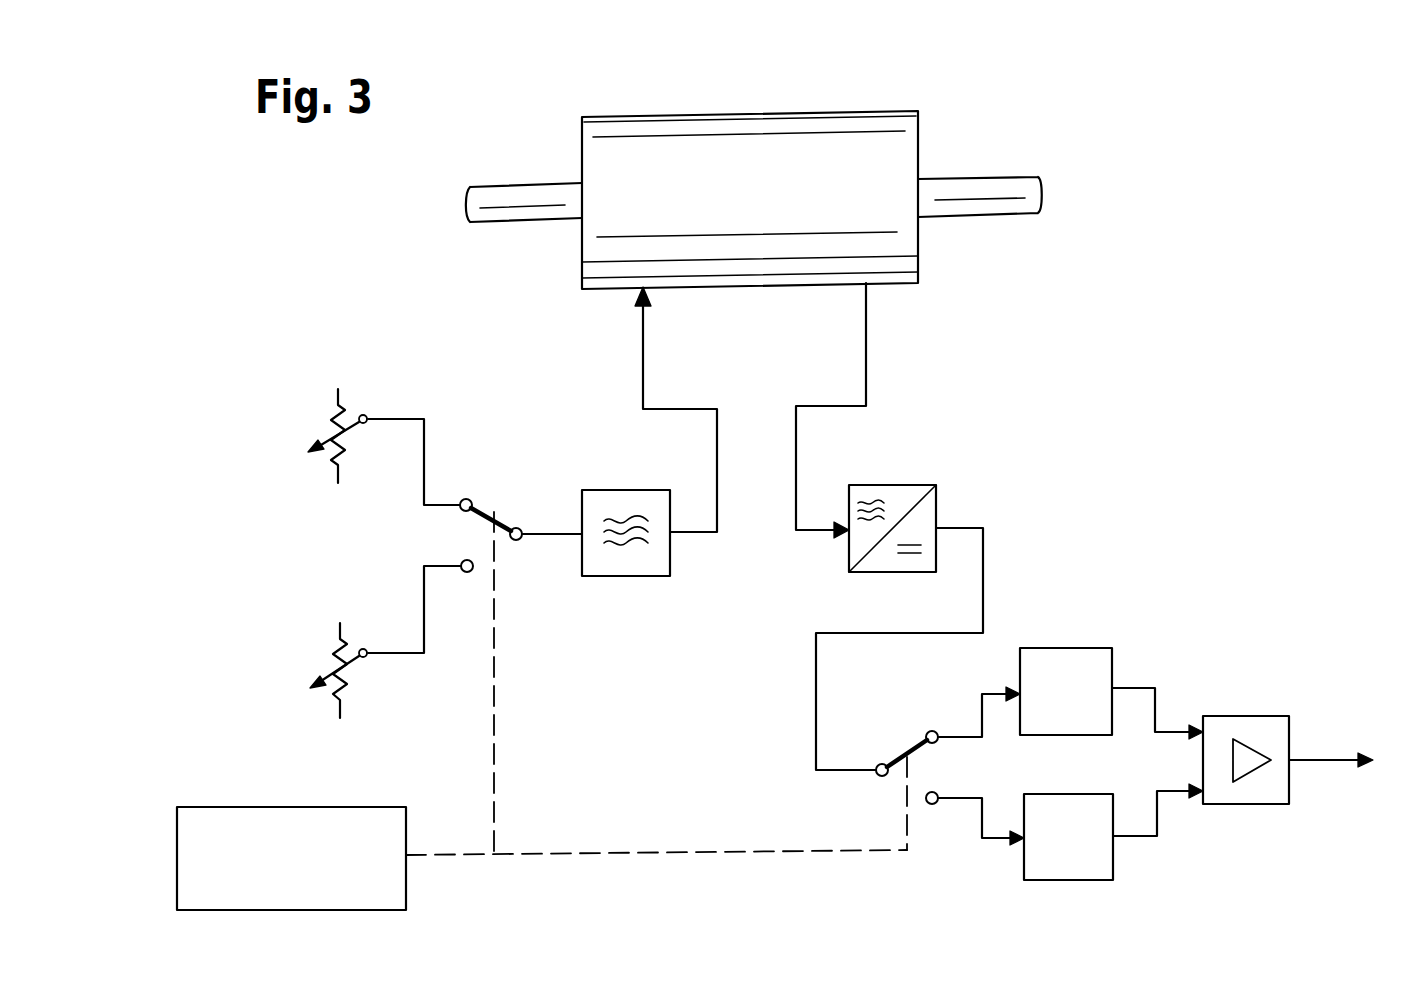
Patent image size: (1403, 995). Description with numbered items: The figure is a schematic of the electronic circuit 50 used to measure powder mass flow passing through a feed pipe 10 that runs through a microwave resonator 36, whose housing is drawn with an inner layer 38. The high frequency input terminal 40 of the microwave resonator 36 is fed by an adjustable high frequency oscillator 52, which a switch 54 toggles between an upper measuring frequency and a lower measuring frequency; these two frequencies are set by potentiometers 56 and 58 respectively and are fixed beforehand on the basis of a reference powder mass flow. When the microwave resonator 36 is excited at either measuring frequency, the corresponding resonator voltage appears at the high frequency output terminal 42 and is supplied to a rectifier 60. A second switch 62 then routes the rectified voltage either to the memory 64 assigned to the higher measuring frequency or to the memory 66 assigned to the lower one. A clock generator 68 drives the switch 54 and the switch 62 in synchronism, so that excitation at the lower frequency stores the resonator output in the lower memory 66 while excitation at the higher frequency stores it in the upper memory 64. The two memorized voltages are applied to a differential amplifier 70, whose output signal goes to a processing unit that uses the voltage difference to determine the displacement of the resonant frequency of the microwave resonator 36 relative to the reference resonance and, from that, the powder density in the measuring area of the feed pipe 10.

The feed pipe 10 is at (500, 190).
The microwave resonator 36 is at (636, 104).
The electrode layer 38 is at (820, 127).
The high frequency input terminal 40 is at (643, 347).
The high frequency output terminal 42 is at (866, 357).
The electronic circuit 50 is at (1208, 299).
The adjustable high frequency oscillator 52 is at (630, 576).
The switch 54 is at (490, 520).
The potentiometer 56 is at (331, 421).
The potentiometer 58 is at (336, 657).
The rectifier 60 is at (893, 572).
The switch 62 is at (912, 752).
The memory 64 is at (1075, 648).
The memory 66 is at (1115, 858).
The clock generator 68 is at (243, 807).
The differential amplifier 70 is at (1262, 716).